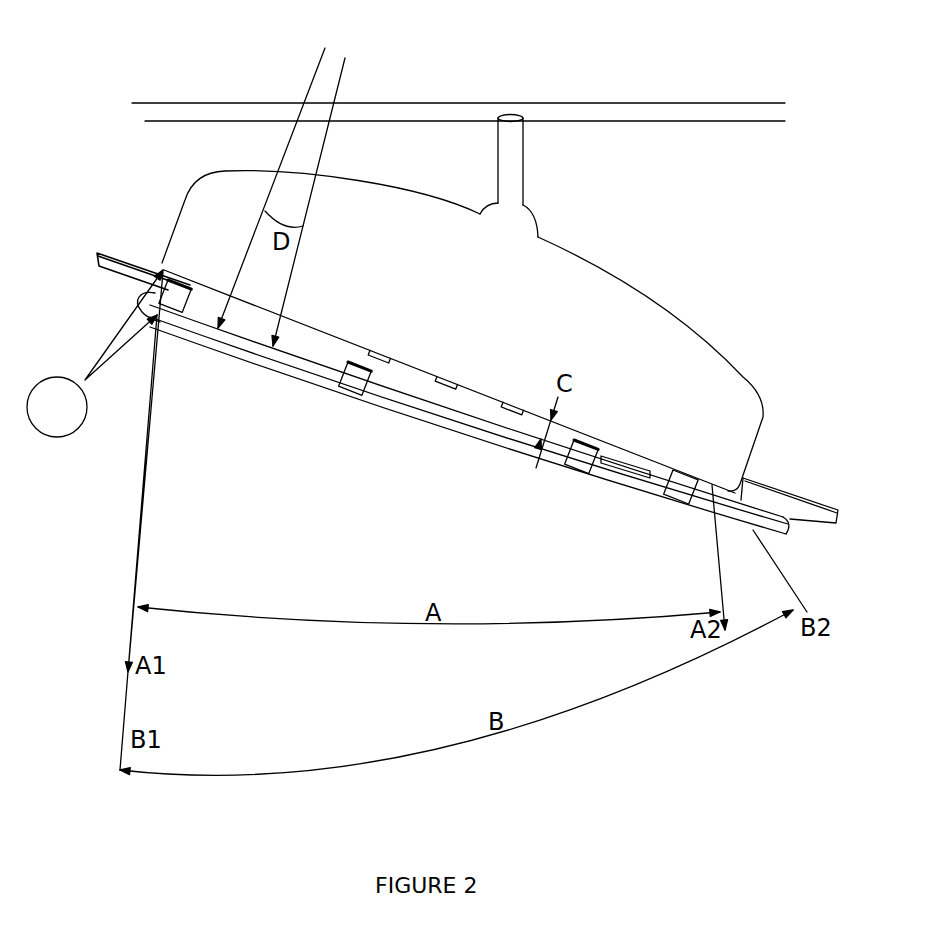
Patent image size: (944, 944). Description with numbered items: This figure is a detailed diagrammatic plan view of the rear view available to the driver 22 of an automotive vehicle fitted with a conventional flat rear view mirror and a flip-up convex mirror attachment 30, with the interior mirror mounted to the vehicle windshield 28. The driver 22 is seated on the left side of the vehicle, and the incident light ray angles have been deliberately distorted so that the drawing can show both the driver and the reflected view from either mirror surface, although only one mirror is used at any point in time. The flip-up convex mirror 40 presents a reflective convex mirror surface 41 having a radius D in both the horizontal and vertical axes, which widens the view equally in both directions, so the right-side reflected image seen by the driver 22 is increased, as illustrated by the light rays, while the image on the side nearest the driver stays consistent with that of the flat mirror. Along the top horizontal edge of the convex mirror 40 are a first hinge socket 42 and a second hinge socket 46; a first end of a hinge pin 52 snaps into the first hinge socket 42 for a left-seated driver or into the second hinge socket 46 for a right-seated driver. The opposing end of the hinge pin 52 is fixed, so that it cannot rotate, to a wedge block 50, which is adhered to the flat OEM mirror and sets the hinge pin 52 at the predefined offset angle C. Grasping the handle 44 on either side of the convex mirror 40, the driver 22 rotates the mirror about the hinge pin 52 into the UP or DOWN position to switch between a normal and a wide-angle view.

The driver 22 is at (50, 437).
The vehicle windshield 28 is at (540, 113).
The flip-up convex mirror attachment 30 is at (633, 212).
The flip-up convex mirror 40 is at (427, 422).
The reflective convex mirror surface 41 is at (547, 467).
The first hinge socket 42 is at (588, 457).
The handle 44 is at (787, 505).
The second hinge socket 46 is at (355, 376).
The wedge block 50 is at (690, 490).
The hinge pin 52 is at (640, 470).